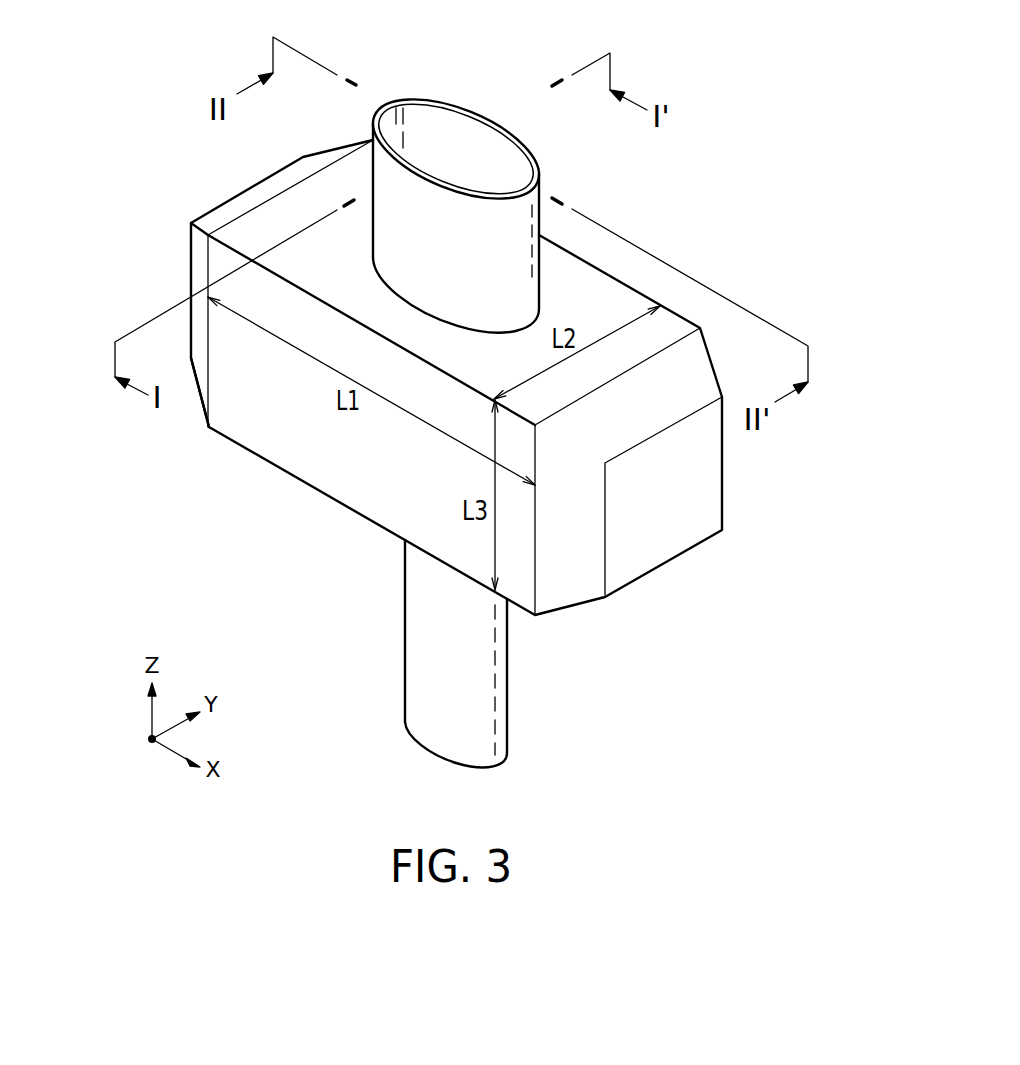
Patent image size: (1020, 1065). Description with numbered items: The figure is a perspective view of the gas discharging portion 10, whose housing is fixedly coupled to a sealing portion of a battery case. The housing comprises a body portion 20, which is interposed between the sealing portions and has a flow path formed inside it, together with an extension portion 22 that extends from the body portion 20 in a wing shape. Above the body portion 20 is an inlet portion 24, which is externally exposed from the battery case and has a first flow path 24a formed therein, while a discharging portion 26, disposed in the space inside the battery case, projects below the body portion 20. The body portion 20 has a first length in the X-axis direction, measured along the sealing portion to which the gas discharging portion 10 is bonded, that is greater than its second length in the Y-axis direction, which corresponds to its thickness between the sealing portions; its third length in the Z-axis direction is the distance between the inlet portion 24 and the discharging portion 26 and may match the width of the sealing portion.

The gas discharging portion 10 is at (443, 34).
The body portion 20 is at (320, 452).
The extension portion 22 is at (197, 387).
The inlet portion 24 is at (493, 199).
The first flow path 24a is at (450, 168).
The discharging portion 26 is at (437, 638).